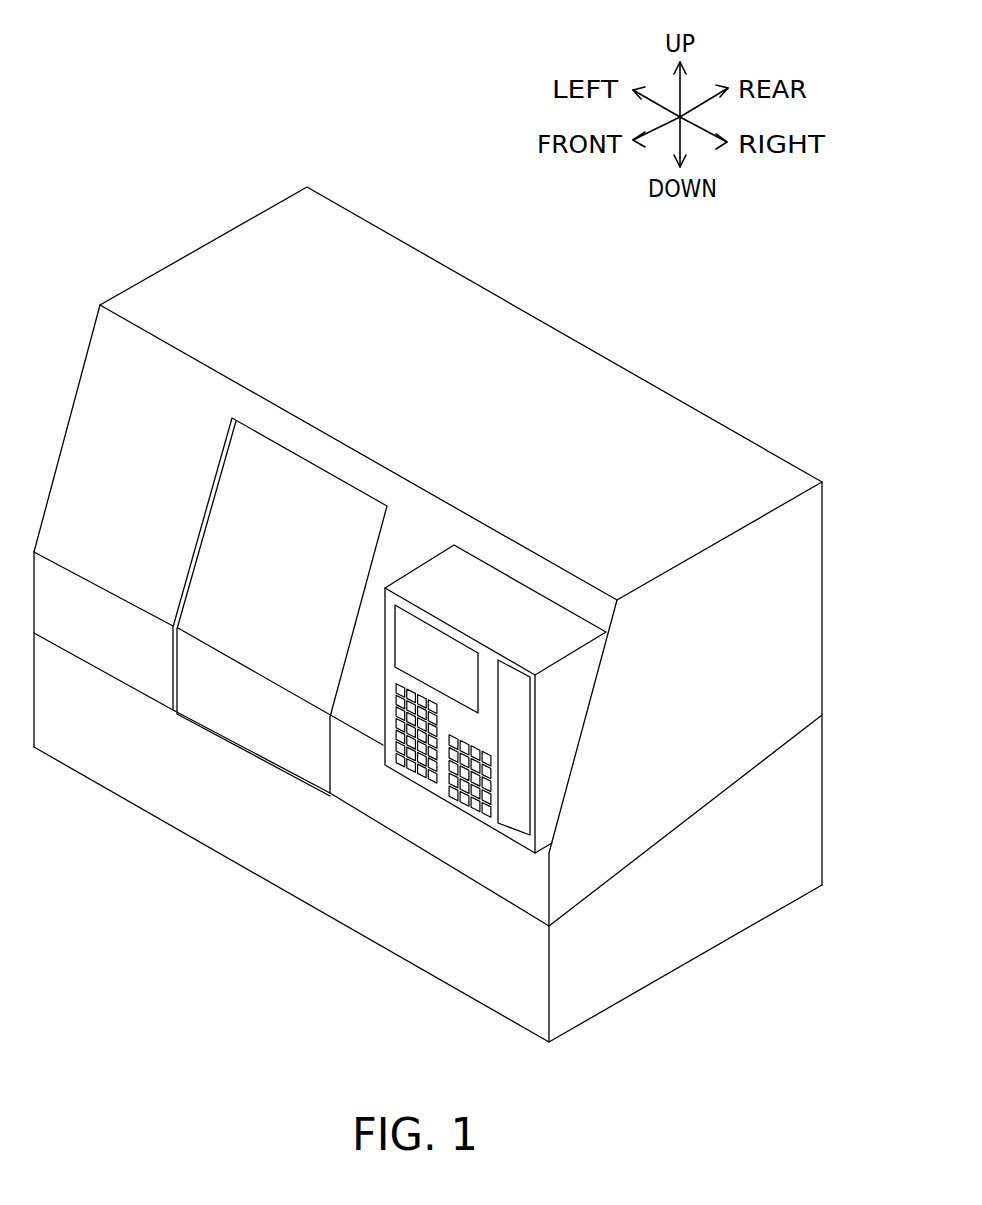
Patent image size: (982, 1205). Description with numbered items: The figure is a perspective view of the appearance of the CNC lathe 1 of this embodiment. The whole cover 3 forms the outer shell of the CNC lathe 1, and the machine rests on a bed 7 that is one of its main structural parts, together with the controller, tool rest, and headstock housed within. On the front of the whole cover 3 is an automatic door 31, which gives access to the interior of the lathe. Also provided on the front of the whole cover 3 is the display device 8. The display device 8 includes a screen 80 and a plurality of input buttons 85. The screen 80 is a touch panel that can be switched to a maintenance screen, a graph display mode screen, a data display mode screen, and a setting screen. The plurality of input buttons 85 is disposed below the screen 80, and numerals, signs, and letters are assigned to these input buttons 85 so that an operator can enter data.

The CNC lathe 1 is at (193, 153).
The whole cover 3 is at (503, 348).
The bed 7 is at (653, 935).
The display device 8 is at (527, 618).
The automatic door 31 is at (232, 704).
The screen 80 is at (455, 672).
The input buttons 85 is at (423, 765).